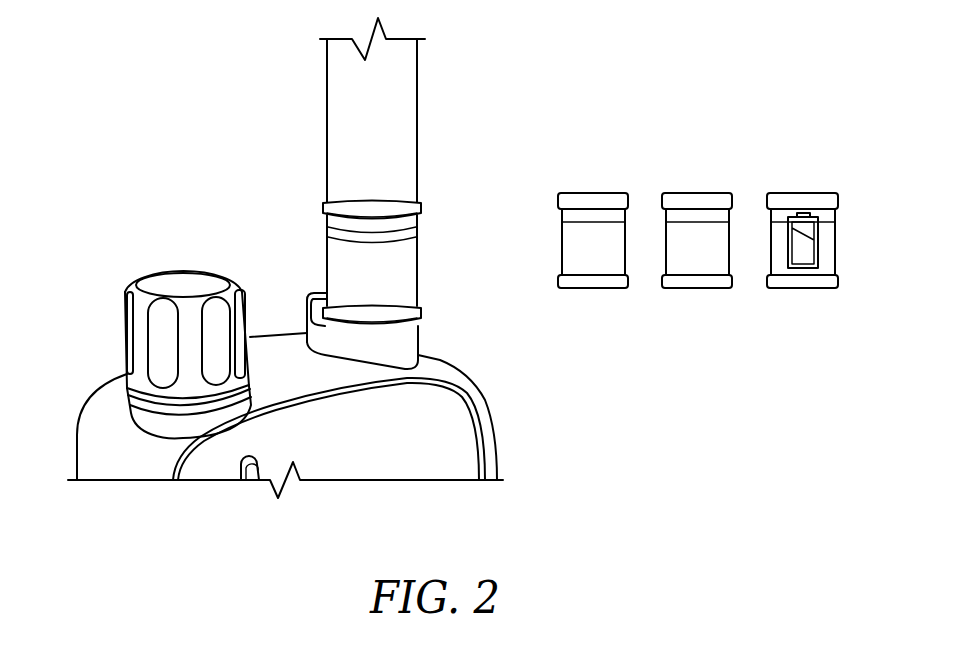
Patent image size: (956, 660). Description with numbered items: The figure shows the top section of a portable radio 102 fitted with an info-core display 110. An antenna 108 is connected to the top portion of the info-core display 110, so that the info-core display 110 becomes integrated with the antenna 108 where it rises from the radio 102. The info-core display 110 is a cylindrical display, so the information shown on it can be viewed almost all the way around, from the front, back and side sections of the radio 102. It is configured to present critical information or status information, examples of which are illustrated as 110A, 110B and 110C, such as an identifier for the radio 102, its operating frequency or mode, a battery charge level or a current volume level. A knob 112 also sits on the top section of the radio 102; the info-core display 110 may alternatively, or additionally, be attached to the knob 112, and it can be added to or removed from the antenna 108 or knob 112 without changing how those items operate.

The portable radio 102 is at (513, 439).
The antenna 108 is at (430, 136).
The info-core display 110 is at (432, 264).
The information example 110A is at (593, 193).
The information example 110B is at (697, 193).
The information example 110C is at (802, 193).
The knob 112 is at (98, 300).